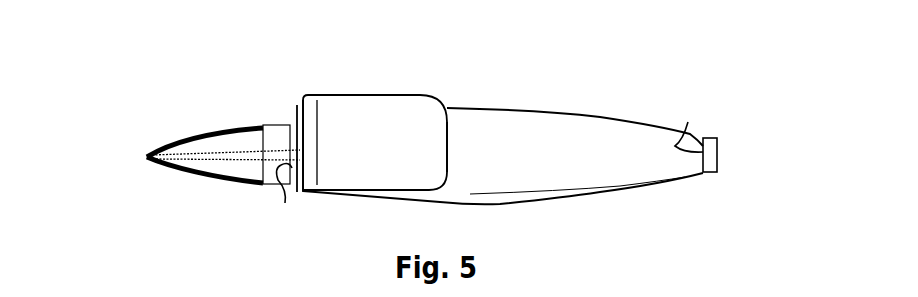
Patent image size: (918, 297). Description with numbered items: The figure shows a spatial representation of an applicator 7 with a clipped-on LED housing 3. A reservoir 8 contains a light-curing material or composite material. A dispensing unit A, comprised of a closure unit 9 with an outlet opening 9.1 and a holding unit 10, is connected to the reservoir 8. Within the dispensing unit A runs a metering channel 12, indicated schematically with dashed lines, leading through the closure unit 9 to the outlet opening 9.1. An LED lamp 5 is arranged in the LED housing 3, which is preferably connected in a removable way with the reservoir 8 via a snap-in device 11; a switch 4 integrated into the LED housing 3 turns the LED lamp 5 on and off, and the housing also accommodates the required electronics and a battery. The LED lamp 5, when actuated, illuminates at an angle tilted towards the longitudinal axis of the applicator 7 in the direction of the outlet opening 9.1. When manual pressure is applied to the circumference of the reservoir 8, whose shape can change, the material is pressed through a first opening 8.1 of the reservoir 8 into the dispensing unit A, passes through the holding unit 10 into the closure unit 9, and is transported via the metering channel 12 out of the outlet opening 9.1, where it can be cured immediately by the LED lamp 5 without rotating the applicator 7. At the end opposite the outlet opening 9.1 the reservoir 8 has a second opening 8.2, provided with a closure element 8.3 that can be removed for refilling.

The applicator 7 is at (580, 92).
The reservoir 8 is at (489, 150).
The LED housing 3 is at (397, 103).
The switch 4 is at (348, 96).
The snap-in device 11 is at (397, 163).
The LED lamp 5 is at (301, 106).
The holding unit 10 is at (271, 135).
The metering channel 12 is at (221, 153).
The closure unit 9 is at (190, 135).
The outlet opening 9.1 is at (146, 157).
The dispensing unit A is at (243, 108).
The first opening 8.1 is at (285, 203).
The second opening 8.2 is at (688, 122).
The closure element 8.3 is at (717, 140).